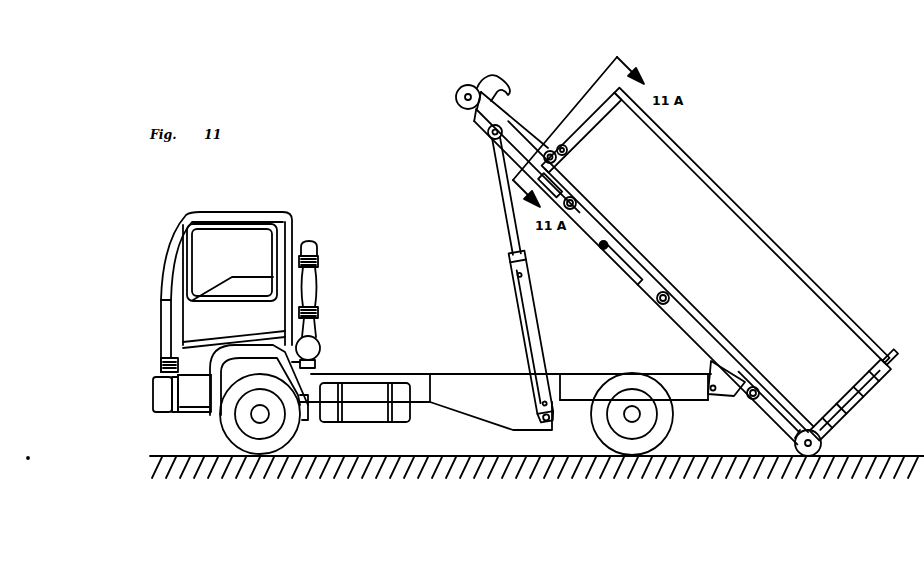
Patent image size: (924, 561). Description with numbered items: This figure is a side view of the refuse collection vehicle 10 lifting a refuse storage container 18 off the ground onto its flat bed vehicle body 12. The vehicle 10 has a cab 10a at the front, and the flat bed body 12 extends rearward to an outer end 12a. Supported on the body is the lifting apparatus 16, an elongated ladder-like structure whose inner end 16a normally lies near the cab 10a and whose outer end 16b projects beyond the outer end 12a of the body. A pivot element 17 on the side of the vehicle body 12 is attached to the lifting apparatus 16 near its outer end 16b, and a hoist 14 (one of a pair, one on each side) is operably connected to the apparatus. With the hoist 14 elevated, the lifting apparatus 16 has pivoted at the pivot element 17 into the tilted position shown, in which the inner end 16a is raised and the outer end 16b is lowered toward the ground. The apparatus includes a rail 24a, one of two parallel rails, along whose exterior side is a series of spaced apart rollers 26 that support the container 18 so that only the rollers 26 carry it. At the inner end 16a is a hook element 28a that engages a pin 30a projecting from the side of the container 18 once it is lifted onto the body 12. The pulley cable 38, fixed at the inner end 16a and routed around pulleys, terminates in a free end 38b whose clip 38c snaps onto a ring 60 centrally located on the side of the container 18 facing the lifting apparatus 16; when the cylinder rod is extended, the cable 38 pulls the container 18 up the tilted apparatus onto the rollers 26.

The refuse collection vehicle 10 is at (122, 204).
The cab 10a is at (160, 337).
The flat bed vehicle body 12 is at (582, 405).
The outer end of the flat bed body 12a is at (722, 400).
The hoist 14 is at (514, 308).
The lifting apparatus 16 is at (763, 418).
The inner end of the lifting apparatus 16a is at (478, 124).
The outer end of the lifting apparatus 16b is at (781, 440).
The pivot element 17 is at (695, 372).
The refuse storage container 18 is at (746, 213).
The rail 24a is at (700, 340).
The rollers 26 is at (583, 207).
The hook element 28a is at (490, 78).
The pin 30a is at (563, 168).
The pulley cable 38 is at (522, 112).
The free end of the cable 38b is at (548, 146).
The clip 38c is at (562, 143).
The ring 60 is at (573, 118).